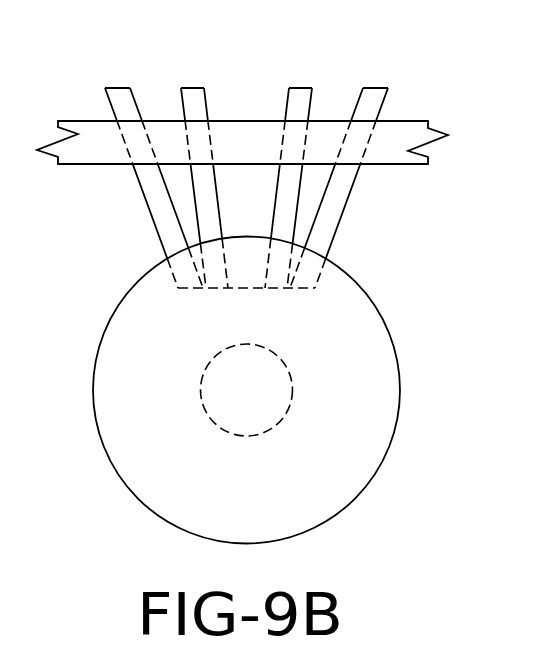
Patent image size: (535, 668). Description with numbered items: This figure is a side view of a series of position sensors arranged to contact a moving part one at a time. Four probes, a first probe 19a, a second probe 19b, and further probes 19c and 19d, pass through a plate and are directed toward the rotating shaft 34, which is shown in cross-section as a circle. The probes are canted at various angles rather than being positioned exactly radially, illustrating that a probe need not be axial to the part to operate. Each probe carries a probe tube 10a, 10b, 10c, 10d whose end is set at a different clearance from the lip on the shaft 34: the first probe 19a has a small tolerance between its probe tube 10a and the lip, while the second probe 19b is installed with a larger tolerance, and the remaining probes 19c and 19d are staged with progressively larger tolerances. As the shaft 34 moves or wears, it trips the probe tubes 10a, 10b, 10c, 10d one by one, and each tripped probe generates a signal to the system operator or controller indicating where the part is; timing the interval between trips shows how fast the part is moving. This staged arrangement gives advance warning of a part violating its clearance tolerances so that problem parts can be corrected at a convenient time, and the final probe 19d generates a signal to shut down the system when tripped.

The first probe 19a is at (117, 88).
The second probe 19b is at (193, 88).
The probe 19c is at (302, 88).
The probe 19d is at (378, 88).
The probe tube 10a is at (148, 182).
The probe tube 10b is at (203, 202).
The probe tube 10c is at (287, 203).
The probe tube 10d is at (348, 178).
The shaft 34 is at (268, 377).